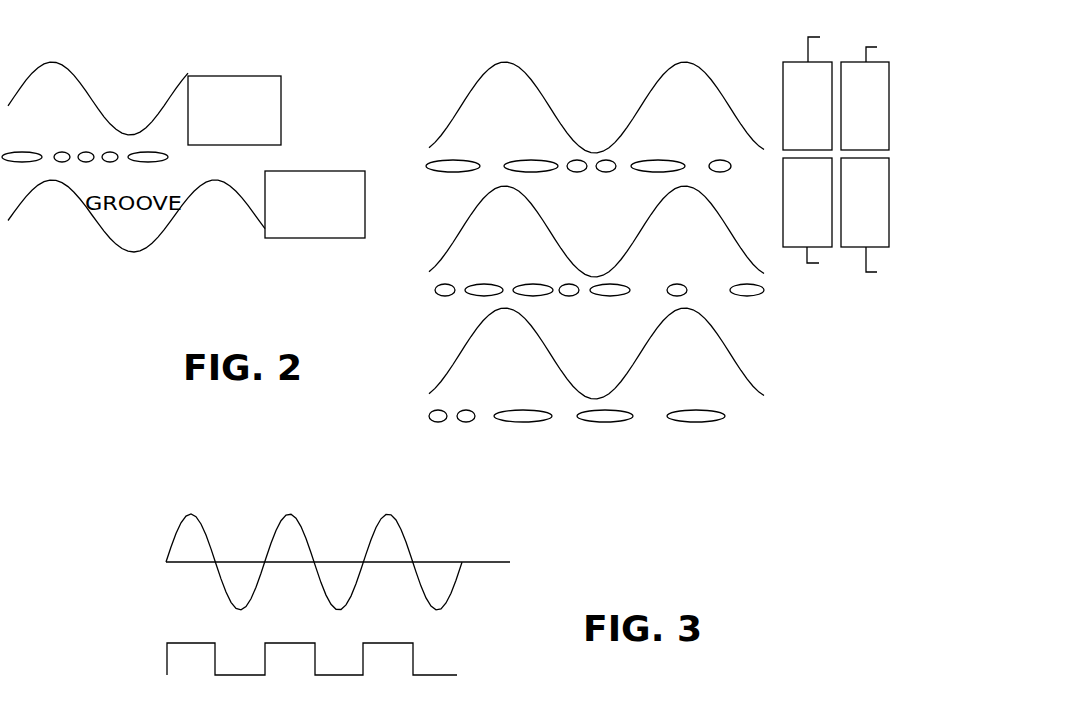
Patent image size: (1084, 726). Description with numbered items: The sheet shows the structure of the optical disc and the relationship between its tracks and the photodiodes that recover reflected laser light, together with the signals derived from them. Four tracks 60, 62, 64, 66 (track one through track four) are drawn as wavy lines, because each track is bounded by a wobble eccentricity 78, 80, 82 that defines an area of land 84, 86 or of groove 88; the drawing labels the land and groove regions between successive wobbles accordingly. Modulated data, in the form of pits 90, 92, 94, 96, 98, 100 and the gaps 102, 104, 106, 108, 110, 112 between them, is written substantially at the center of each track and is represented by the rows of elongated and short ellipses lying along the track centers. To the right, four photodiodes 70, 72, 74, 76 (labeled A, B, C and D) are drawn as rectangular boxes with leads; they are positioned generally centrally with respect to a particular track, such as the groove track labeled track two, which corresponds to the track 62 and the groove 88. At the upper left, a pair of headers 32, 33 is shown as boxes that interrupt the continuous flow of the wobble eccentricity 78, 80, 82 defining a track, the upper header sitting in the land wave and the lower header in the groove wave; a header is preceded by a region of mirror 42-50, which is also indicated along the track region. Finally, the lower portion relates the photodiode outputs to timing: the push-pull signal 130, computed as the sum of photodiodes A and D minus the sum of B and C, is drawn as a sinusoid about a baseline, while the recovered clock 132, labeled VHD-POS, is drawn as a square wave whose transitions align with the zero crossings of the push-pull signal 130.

In FIG. 2, the header 32 is at (265, 76).
In FIG. 2, the header 33 is at (338, 172).
In FIG. 3, the mirror 42-50 is at (427, 34).
In FIG. 3, the track 60 is at (767, 98).
In FIG. 3, the track 62 is at (517, 98).
In FIG. 3, the track 64 is at (697, 234).
In FIG. 3, the track 66 is at (517, 354).
In FIG. 3, the photodiode 70 is at (820, 92).
In FIG. 3, the photodiode 72 is at (878, 92).
In FIG. 3, the photodiode 74 is at (878, 188).
In FIG. 3, the photodiode 76 is at (820, 188).
In FIG. 3, the wobble eccentricity 78 is at (466, 113).
In FIG. 3, the wobble eccentricity 80 is at (466, 237).
In FIG. 3, the wobble eccentricity 82 is at (466, 358).
In FIG. 3, the land 84 is at (607, 98).
In FIG. 3, the land 86 is at (517, 232).
In FIG. 3, the groove 88 is at (607, 208).
In FIG. 3, the pit 90 is at (446, 172).
In FIG. 3, the pit 92 is at (513, 160).
In FIG. 3, the pit 94 is at (572, 160).
In FIG. 3, the pit 96 is at (613, 162).
In FIG. 3, the pit 98 is at (657, 161).
In FIG. 3, the pit 100 is at (716, 173).
In FIG. 3, the gap 102 is at (490, 172).
In FIG. 3, the gap 104 is at (565, 172).
In FIG. 3, the gap 106 is at (618, 173).
In FIG. 3, the gap 108 is at (699, 162).
In FIG. 3, the gap 110 is at (648, 290).
In FIG. 3, the gap 112 is at (586, 296).
In FIG. 3, the push-pull signal 130 is at (457, 588).
In FIG. 3, the recovered clock 132 is at (457, 675).